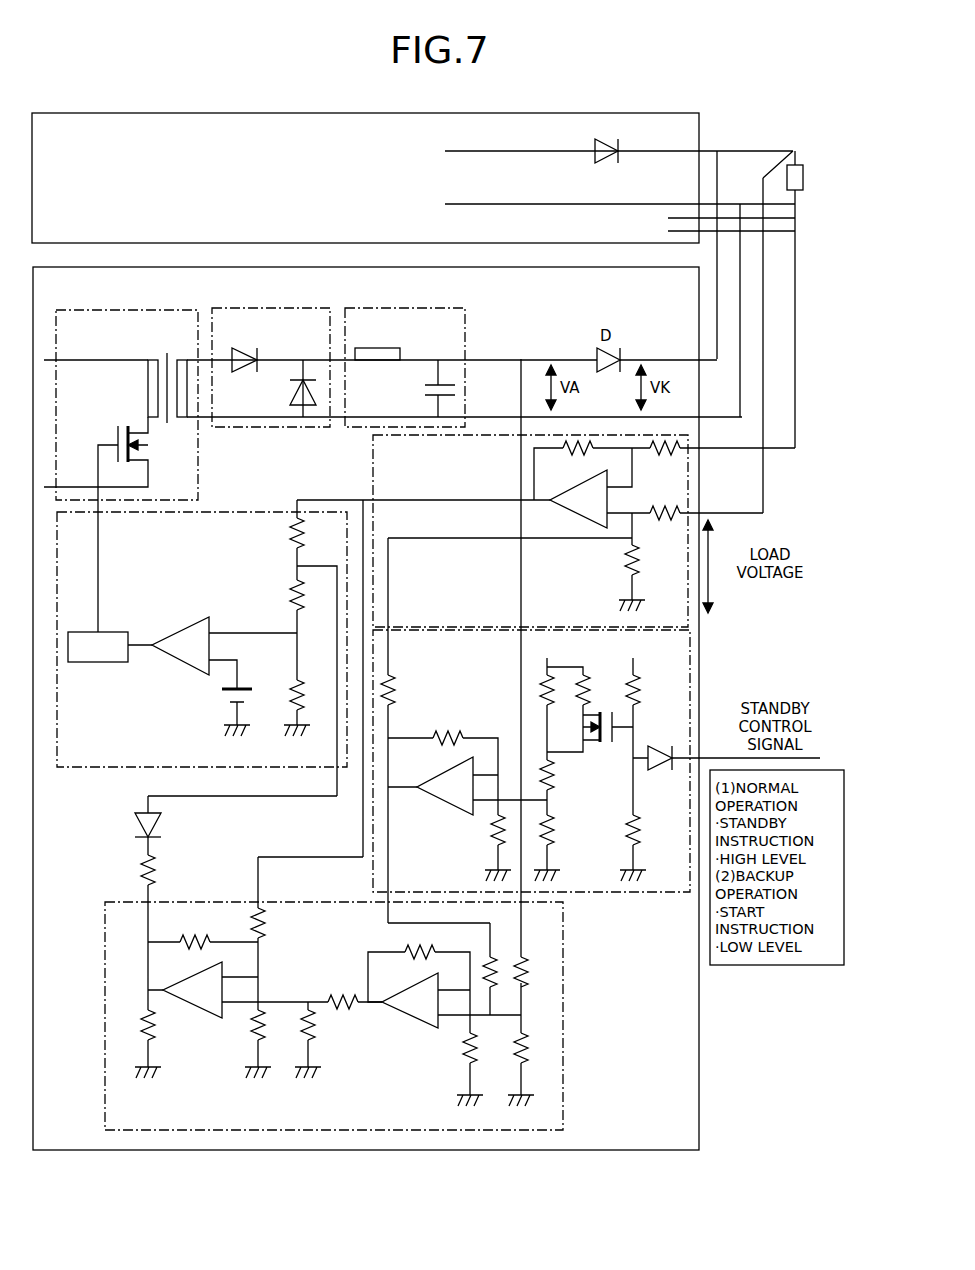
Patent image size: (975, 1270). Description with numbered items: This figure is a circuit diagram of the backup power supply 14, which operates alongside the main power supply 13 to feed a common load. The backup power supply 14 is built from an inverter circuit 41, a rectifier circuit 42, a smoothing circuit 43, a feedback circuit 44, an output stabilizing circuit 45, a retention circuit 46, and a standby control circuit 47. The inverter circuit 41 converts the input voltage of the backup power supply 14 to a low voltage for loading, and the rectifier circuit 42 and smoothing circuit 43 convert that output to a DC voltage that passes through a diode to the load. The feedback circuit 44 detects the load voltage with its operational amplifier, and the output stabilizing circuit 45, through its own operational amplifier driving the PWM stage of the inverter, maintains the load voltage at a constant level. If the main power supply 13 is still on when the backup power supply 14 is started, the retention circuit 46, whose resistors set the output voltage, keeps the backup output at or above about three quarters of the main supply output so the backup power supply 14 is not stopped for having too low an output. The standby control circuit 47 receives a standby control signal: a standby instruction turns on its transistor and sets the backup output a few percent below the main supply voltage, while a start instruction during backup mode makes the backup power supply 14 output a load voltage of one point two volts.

The main power supply 13 is at (656, 109).
The backup power supply 14 is at (656, 263).
The inverter circuit 41 is at (195, 307).
The rectifier circuit 42 is at (302, 307).
The smoothing circuit 43 is at (432, 307).
The feedback circuit 44 is at (372, 460).
The output stabilizing circuit 45 is at (248, 508).
The retention circuit 46 is at (104, 925).
The standby control circuit 47 is at (655, 893).